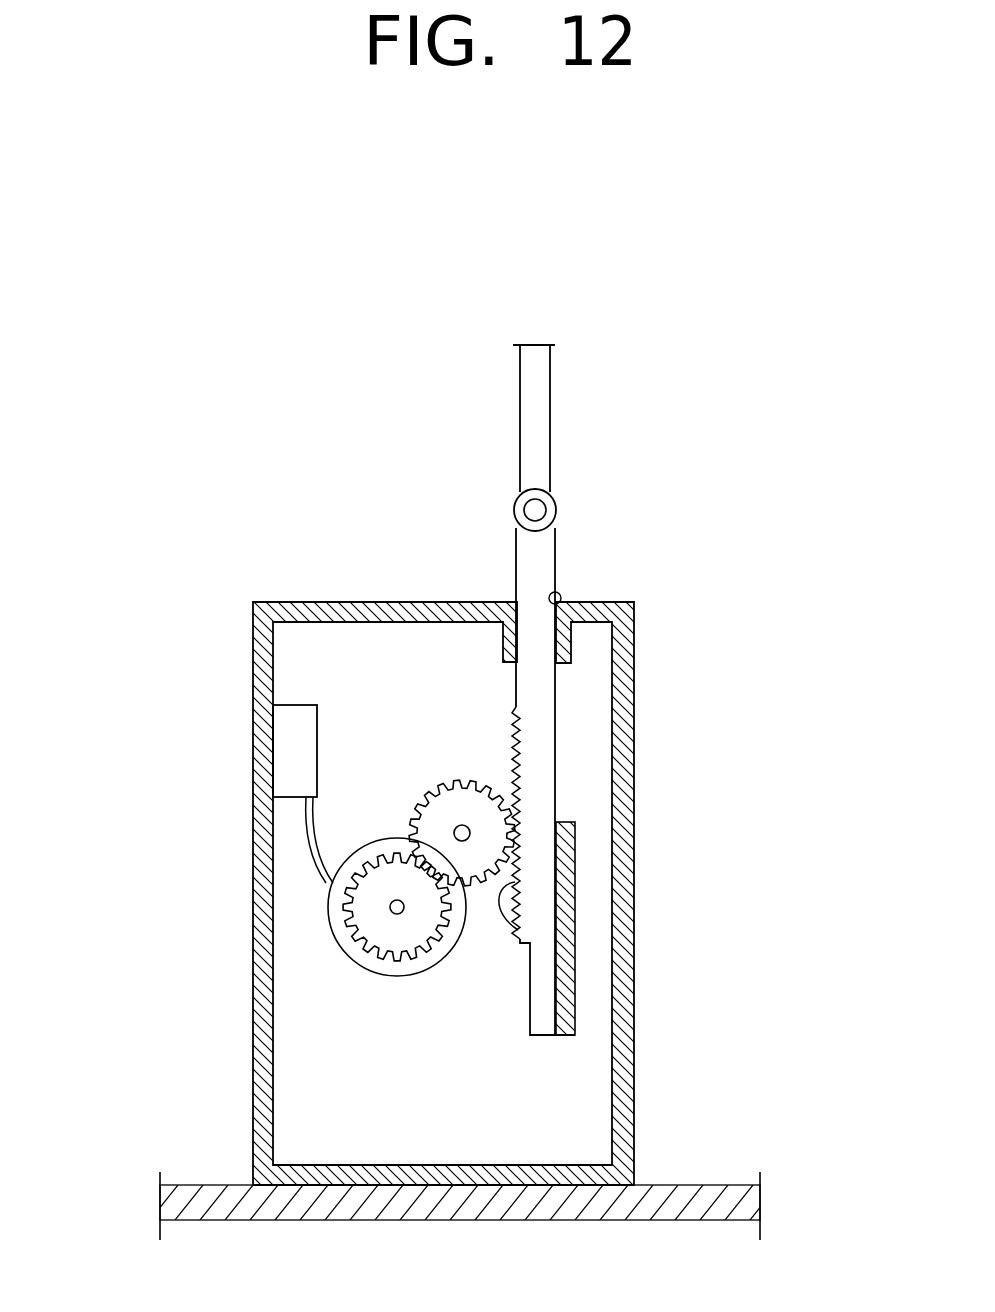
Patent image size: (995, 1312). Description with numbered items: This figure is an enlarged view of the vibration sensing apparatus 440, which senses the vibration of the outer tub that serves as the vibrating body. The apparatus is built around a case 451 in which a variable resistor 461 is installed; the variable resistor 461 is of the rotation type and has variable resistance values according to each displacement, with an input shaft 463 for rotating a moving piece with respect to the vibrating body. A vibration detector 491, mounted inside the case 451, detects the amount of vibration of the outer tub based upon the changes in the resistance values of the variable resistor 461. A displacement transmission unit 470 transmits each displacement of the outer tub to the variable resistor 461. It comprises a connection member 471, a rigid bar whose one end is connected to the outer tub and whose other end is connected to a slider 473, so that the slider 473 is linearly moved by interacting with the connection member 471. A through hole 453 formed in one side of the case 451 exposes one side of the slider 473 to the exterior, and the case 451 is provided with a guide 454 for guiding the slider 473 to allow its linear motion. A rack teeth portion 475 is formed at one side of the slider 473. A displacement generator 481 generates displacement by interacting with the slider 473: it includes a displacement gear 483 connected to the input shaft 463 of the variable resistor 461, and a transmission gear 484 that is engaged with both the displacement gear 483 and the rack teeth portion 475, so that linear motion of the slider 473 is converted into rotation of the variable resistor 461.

The vibration sensing apparatus 440 is at (429, 839).
The case 451 is at (630, 702).
The through hole 453 is at (552, 593).
The guide 454 is at (560, 665).
The displacement transmission unit 470 is at (675, 648).
The connection member 471 is at (543, 409).
The slider 473 is at (623, 753).
The rack teeth portion 475 is at (520, 928).
The displacement generator 481 is at (386, 648).
The displacement gear 483 is at (362, 898).
The transmission gear 484 is at (427, 832).
The variable resistor 461 is at (337, 935).
The input shaft 463 is at (265, 961).
The vibration detector 491 is at (283, 745).